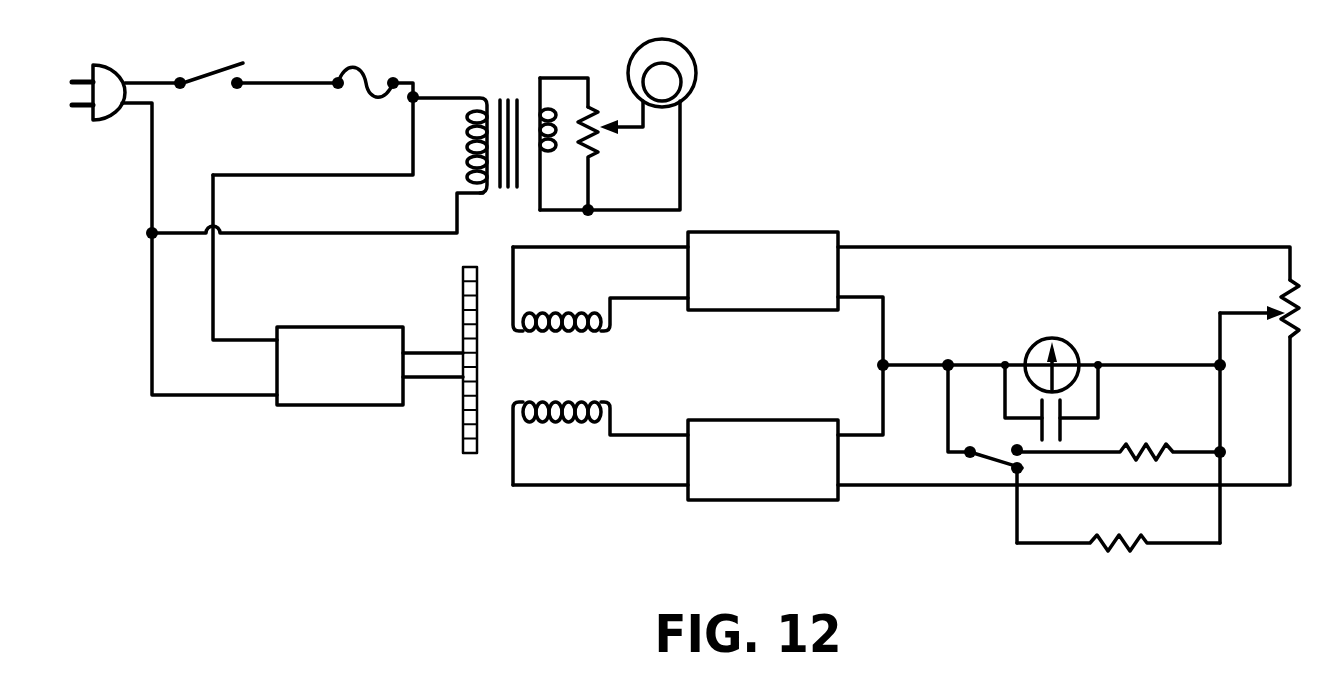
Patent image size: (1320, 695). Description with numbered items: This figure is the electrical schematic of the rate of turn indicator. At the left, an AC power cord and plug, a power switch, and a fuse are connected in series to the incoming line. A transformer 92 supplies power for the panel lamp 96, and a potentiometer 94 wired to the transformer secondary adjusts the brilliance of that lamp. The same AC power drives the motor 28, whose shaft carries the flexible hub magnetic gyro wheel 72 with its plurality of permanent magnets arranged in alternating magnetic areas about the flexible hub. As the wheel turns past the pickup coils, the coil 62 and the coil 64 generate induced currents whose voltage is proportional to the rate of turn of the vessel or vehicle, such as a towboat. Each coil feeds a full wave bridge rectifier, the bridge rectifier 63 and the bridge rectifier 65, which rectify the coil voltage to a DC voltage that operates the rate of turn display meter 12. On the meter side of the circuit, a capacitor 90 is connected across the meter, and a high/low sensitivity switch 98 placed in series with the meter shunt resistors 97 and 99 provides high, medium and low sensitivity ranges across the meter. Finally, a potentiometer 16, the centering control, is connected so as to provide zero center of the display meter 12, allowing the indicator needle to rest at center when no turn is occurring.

The motor 28 is at (205, 69).
The transformer 92 is at (508, 97).
The potentiometer 94 is at (592, 153).
The panel lamp 96 is at (690, 50).
The gyro wheel 72 is at (475, 285).
The coil 62 is at (583, 310).
The full wave bridge rectifier 63 is at (727, 312).
The coil 64 is at (585, 425).
The full wave bridge rectifier 65 is at (727, 422).
The display meter 12 is at (1065, 337).
The potentiometer 16 is at (1282, 302).
The capacitor 90 is at (1062, 430).
The high/low sensitivity switch 98 is at (1003, 452).
The meter shunt resistor 97 is at (1147, 445).
The meter shunt resistor 99 is at (1132, 538).